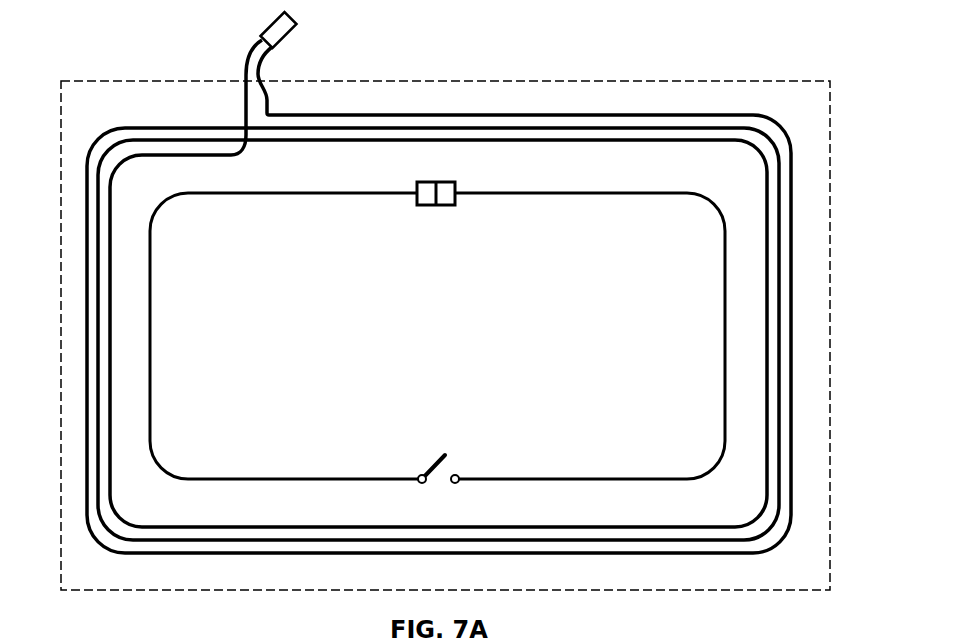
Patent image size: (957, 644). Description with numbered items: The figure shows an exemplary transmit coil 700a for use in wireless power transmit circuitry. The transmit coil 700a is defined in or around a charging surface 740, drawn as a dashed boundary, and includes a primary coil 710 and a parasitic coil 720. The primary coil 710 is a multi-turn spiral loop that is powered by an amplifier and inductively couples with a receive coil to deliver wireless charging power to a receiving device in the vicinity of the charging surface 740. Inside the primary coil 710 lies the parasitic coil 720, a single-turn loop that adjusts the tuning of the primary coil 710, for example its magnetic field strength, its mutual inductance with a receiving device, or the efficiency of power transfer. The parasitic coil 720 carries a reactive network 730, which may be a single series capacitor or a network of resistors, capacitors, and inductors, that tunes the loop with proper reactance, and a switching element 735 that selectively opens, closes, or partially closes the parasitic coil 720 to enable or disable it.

The transmit coil 700a is at (431, 296).
The primary coil 710 is at (202, 525).
The parasitic coil 720 is at (558, 192).
The reactive network 730 is at (442, 182).
The switching element 735 is at (438, 461).
The charging surface 740 is at (572, 81).